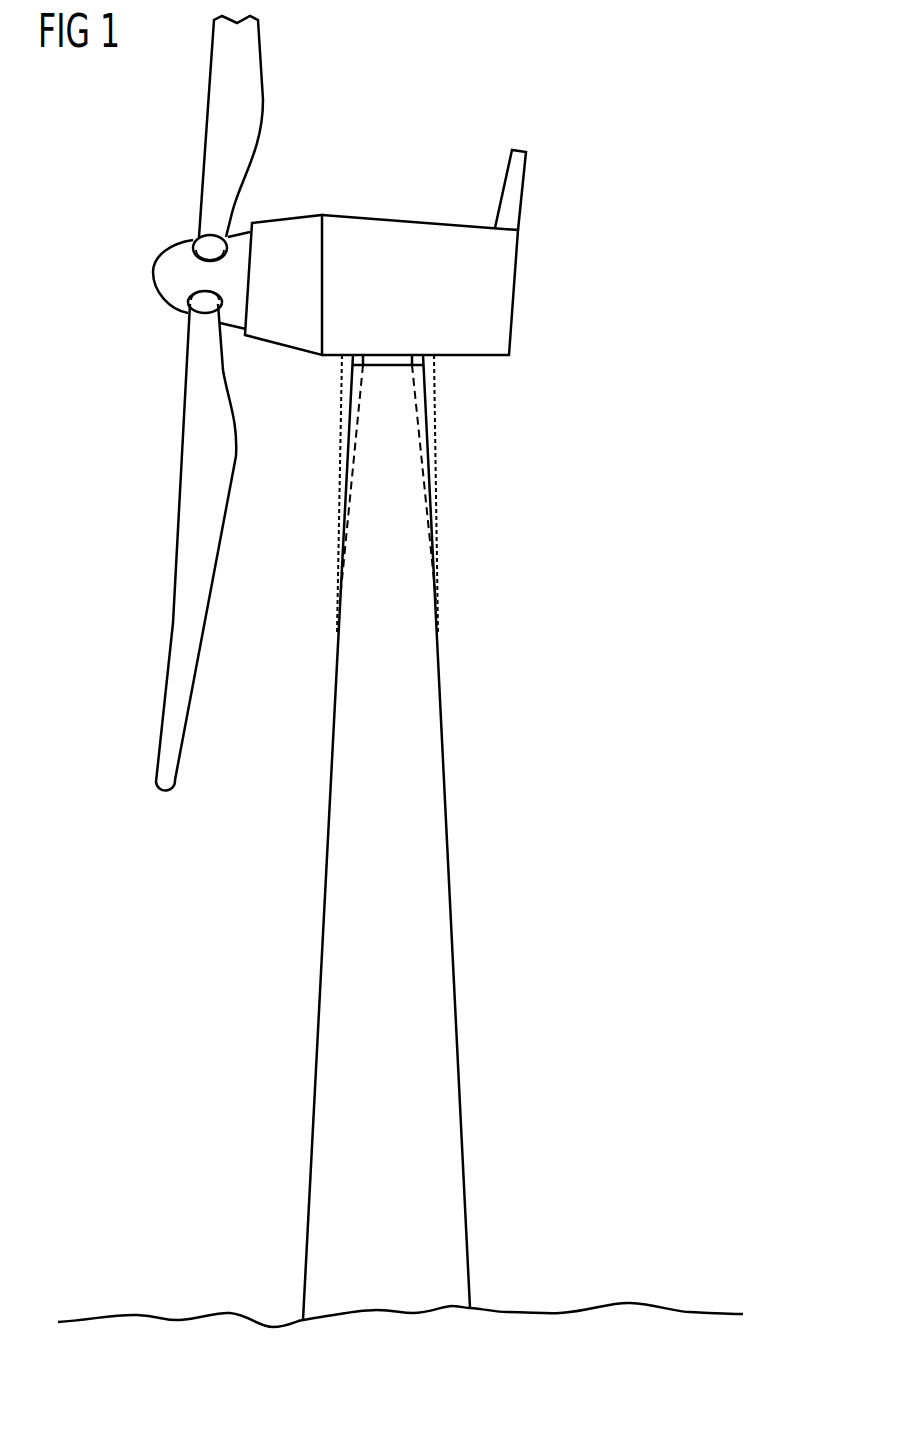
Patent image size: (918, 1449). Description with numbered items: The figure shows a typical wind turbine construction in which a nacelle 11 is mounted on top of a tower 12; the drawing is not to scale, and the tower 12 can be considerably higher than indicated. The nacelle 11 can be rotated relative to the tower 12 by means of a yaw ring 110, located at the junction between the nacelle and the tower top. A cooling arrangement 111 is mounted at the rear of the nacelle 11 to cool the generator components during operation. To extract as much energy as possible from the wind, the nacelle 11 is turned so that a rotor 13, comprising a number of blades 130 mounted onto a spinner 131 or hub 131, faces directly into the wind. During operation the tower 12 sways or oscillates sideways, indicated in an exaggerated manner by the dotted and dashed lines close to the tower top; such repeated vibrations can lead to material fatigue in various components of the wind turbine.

The nacelle 11 is at (386, 229).
The tower 12 is at (432, 757).
The rotor 13 is at (149, 176).
The yaw ring 110 is at (390, 368).
The cooling arrangement 111 is at (515, 192).
The blades 130 is at (175, 621).
The spinner or hub 131 is at (160, 277).